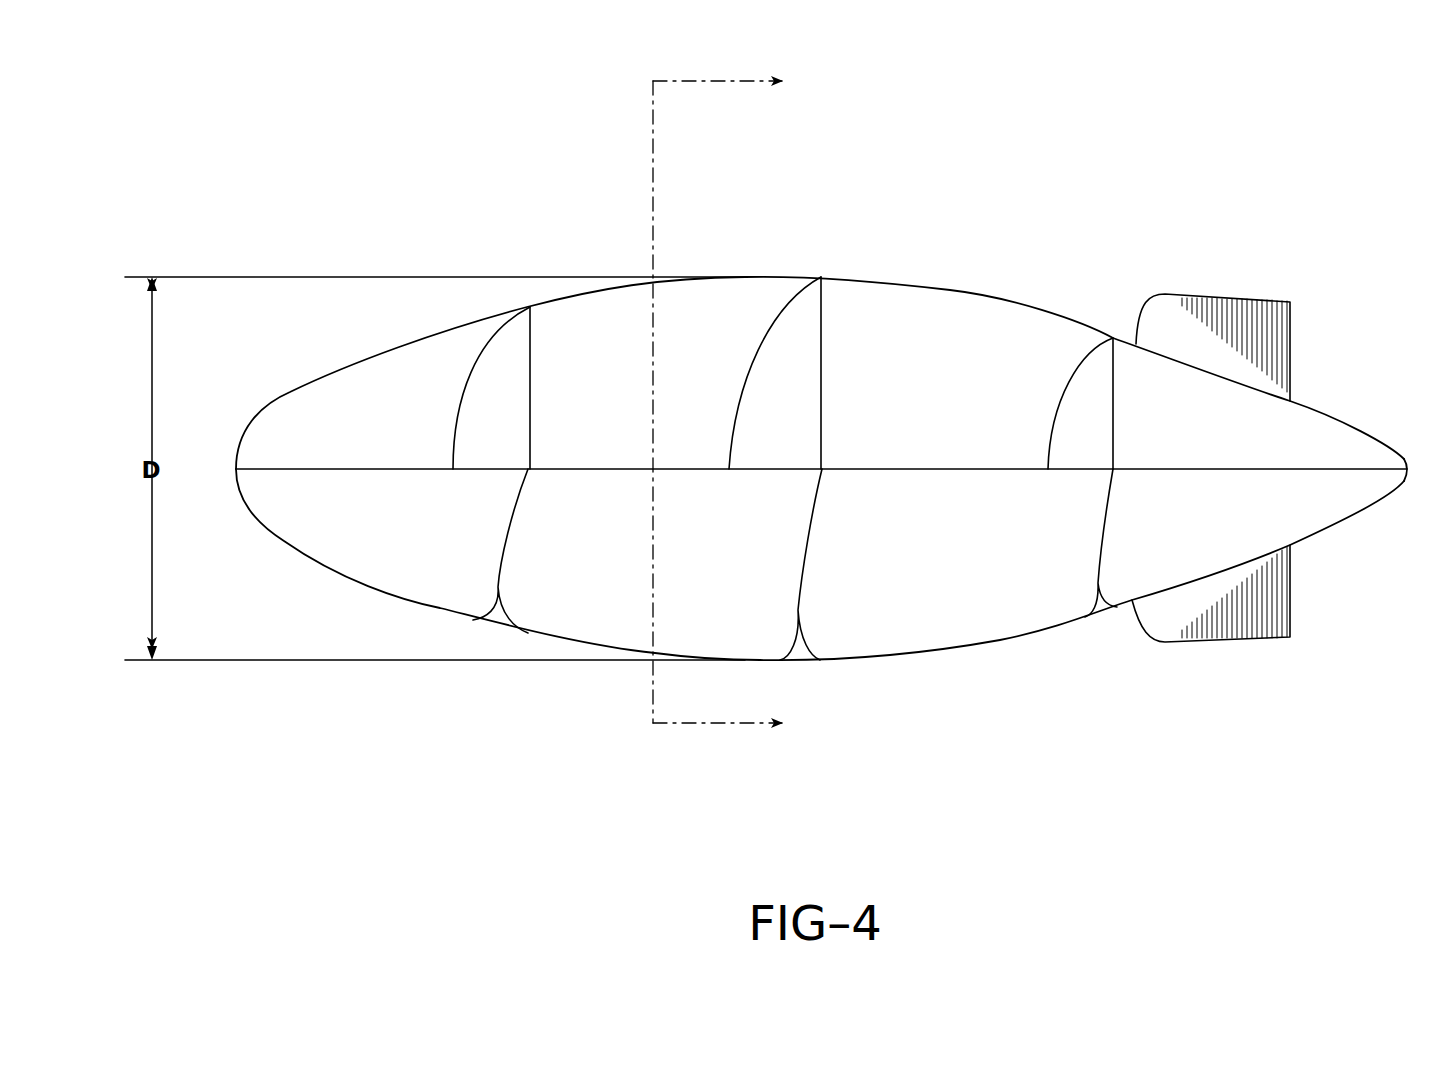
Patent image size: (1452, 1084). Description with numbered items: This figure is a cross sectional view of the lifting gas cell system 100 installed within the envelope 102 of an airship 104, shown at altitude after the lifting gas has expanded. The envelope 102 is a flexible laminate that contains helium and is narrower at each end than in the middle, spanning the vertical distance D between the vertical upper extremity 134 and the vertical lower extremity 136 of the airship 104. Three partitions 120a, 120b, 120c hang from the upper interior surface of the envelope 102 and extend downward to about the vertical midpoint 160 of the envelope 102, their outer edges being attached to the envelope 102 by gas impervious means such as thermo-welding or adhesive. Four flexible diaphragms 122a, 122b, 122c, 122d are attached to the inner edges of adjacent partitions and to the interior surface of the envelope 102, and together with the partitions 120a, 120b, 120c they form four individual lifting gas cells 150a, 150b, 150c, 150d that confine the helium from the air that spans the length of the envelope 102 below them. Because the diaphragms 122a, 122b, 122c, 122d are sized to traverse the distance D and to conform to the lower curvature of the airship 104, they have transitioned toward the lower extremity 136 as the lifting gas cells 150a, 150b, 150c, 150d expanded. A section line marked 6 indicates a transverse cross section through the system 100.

The lifting gas cell system 100 is at (838, 409).
The envelope 102 is at (275, 398).
The airship 104 is at (285, 545).
The partition 120a is at (532, 333).
The partition 120b is at (828, 305).
The partition 120c is at (1119, 361).
The diaphragm 122a is at (450, 562).
The diaphragm 122b is at (637, 613).
The diaphragm 122c is at (907, 595).
The diaphragm 122d is at (1304, 478).
The vertical upper extremity 134 is at (210, 277).
The vertical lower extremity 136 is at (208, 660).
The lifting gas cell 150a is at (465, 373).
The lifting gas cell 150b is at (745, 318).
The lifting gas cell 150c is at (910, 325).
The lifting gas cell 150d is at (1170, 395).
The vertical midpoint 160 is at (1405, 452).
The section line 6- 6 is at (737, 402).